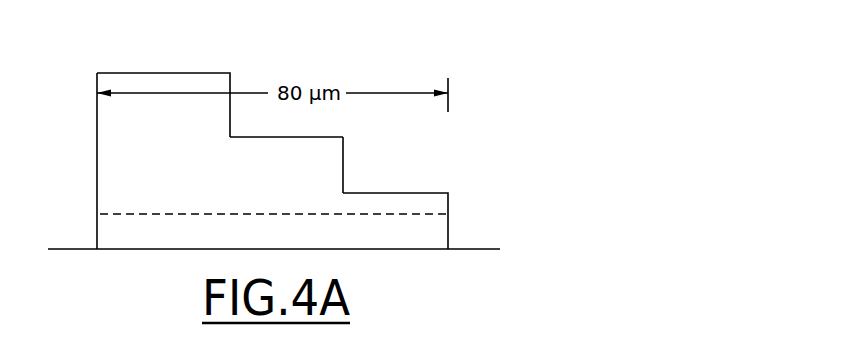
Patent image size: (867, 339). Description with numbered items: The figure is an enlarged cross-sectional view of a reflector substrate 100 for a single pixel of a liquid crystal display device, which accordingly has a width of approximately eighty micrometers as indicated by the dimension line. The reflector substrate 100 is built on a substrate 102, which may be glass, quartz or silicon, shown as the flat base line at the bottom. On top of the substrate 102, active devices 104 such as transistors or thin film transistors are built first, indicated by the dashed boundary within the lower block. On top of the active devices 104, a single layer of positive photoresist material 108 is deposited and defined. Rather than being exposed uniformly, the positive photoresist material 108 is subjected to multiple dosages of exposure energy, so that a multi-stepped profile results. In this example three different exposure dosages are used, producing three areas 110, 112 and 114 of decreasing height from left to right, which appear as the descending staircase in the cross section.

The reflector substrate 100 is at (314, 133).
The substrate 102 is at (446, 290).
The active devices 104 is at (440, 231).
The positive photoresist material 108 is at (363, 166).
The first exposure area 110 is at (168, 73).
The second exposure area 112 is at (282, 137).
The third exposure area 114 is at (437, 192).